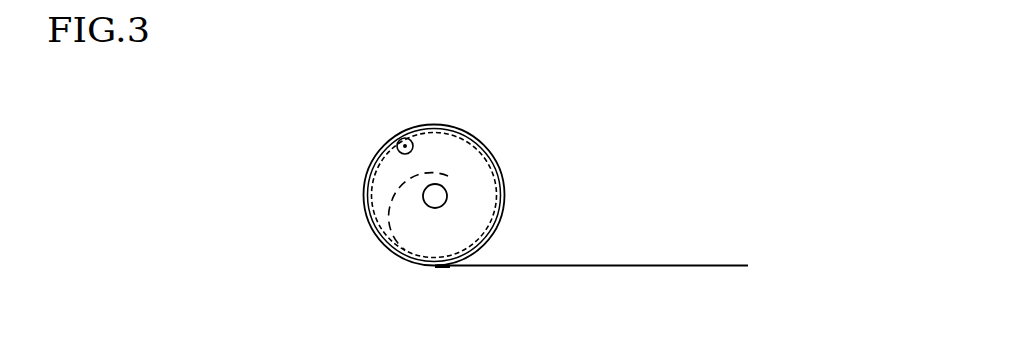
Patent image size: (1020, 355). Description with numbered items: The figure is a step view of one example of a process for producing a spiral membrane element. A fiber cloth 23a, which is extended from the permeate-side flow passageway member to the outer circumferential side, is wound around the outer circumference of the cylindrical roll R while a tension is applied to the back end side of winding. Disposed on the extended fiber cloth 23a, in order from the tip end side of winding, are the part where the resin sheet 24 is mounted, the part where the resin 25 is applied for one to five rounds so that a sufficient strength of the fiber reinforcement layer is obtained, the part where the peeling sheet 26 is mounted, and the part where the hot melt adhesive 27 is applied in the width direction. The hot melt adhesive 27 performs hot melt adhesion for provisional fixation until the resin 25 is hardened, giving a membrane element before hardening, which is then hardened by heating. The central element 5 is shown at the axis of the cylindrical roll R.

The shaft 5 is at (440, 184).
The resin sheet 24 is at (396, 146).
The resin 25 is at (371, 212).
The peeling sheet 26 is at (503, 196).
The hot melt adhesive 27 is at (442, 268).
The fiber cloth 23a is at (635, 267).
The cylindrical roll R is at (472, 169).